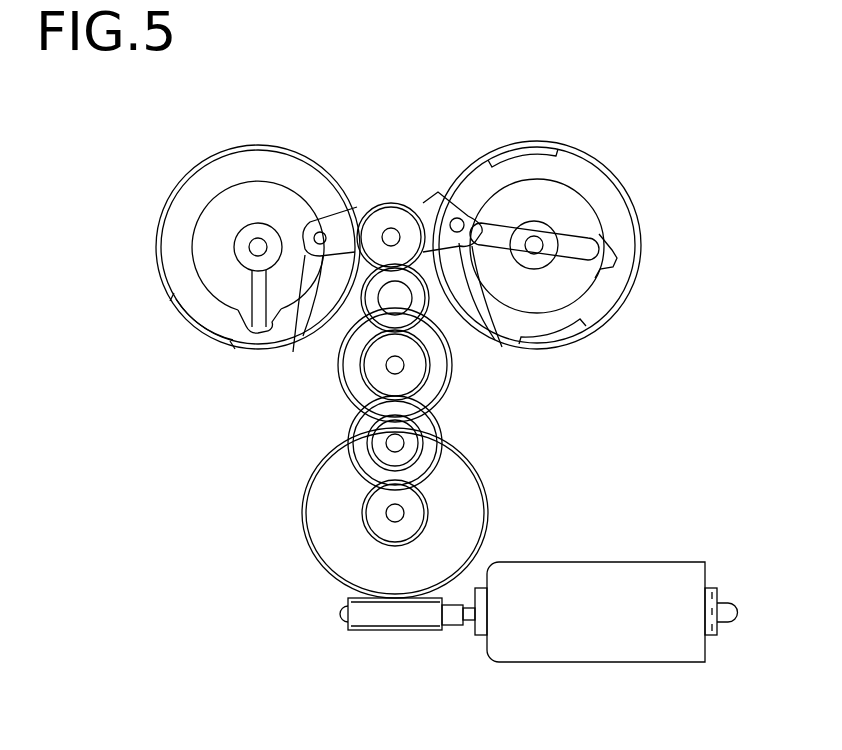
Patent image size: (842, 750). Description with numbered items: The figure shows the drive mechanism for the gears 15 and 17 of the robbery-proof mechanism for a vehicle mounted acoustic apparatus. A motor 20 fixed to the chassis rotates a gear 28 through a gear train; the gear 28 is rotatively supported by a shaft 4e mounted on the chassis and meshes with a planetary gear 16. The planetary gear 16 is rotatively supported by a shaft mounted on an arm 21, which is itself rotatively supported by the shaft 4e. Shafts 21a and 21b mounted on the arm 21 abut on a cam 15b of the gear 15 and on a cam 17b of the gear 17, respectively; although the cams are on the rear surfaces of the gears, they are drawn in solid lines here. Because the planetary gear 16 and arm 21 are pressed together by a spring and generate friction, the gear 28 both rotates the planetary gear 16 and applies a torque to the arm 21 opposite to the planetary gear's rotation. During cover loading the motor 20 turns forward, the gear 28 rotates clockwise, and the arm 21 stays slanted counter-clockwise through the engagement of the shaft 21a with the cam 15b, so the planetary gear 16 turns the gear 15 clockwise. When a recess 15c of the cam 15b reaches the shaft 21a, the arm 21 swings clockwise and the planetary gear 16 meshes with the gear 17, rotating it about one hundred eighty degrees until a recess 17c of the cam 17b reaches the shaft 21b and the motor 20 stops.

The gear 15 is at (181, 183).
The cam 15b is at (263, 181).
The recess 15c is at (242, 346).
The planetary gear 16 is at (390, 203).
The arm 21 is at (436, 196).
The shaft 21a is at (293, 345).
The shaft 21b is at (496, 344).
The gear 17 is at (618, 181).
The cam 17b is at (560, 179).
The recess 17c is at (456, 220).
The gear 28 is at (358, 272).
The shaft 4e is at (408, 302).
The motor 20 is at (665, 562).